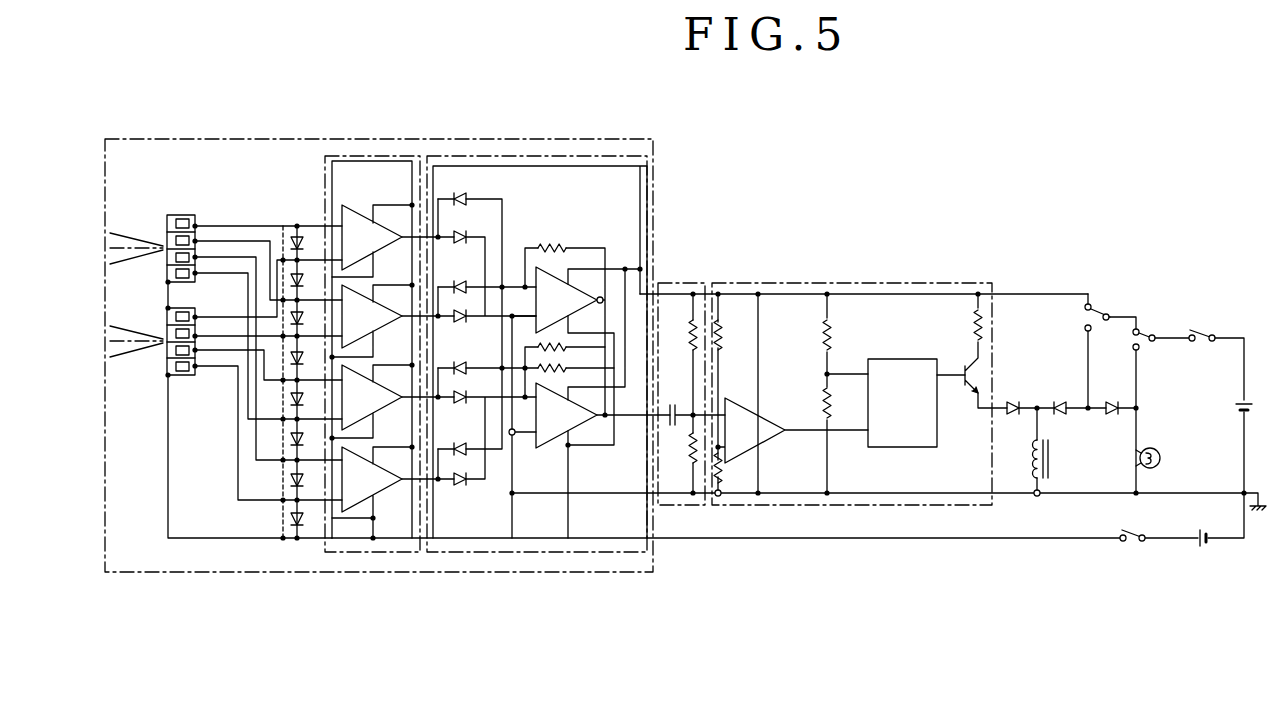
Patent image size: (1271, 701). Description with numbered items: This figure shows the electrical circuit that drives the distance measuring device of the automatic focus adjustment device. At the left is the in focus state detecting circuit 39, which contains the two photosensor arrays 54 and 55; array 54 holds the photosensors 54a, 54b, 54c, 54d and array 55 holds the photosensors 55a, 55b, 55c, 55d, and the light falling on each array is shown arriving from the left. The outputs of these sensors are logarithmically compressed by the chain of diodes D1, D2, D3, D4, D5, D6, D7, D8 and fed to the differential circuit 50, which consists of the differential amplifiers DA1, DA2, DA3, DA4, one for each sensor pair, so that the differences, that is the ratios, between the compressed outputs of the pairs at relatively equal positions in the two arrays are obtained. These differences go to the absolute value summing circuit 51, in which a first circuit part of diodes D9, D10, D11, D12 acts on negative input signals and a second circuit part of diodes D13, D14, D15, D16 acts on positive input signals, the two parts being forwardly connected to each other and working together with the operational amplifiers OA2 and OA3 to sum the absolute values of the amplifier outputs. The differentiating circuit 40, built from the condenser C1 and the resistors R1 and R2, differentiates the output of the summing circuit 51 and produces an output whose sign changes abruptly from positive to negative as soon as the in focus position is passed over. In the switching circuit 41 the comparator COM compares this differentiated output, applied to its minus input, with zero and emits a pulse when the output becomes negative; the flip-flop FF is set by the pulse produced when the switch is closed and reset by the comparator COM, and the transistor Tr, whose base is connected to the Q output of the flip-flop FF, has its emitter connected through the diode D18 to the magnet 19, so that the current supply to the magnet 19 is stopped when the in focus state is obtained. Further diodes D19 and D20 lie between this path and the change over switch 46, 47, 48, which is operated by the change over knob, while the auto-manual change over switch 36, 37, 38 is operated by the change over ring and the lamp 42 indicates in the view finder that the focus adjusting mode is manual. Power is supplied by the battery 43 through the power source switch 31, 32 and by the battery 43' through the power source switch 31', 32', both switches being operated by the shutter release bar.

The in focus state detecting circuit 39 is at (230, 132).
The differential circuit 50 is at (348, 149).
The absolute value summing circuit 51 is at (455, 149).
The differentiating circuit 40 is at (681, 275).
The switching circuit 41 is at (743, 275).
The photosensor array 54 is at (170, 231).
The photosensor 54a is at (186, 219).
The photosensor 54b is at (180, 240).
The photosensor 54c is at (180, 258).
The photosensor 54d is at (186, 275).
The photosensor array 55 is at (174, 365).
The photosensor 55a is at (186, 313).
The photosensor 55b is at (180, 333).
The photosensor 55c is at (180, 350).
The photosensor 55d is at (186, 368).
The diode D1 is at (307, 252).
The diode D2 is at (308, 288).
The diode D3 is at (305, 330).
The diode D4 is at (309, 369).
The diode D5 is at (305, 410).
The diode D6 is at (309, 448).
The diode D7 is at (310, 482).
The diode D8 is at (309, 527).
The diode D9 is at (466, 203).
The diode D10 is at (462, 270).
The diode D11 is at (458, 363).
The diode D12 is at (458, 444).
The diode D13 is at (456, 243).
The diode D14 is at (456, 322).
The diode D15 is at (456, 403).
The diode D16 is at (456, 485).
The differential amplifier DA1 is at (373, 239).
The differential amplifier DA2 is at (371, 320).
The differential amplifier DA3 is at (371, 401).
The differential amplifier DA4 is at (373, 492).
The second operational amplifier OA2 is at (575, 391).
The operational amplifier OA3 is at (589, 358).
The resistor R1 is at (689, 450).
The resistor R2 is at (689, 345).
The condenser C1 is at (672, 404).
The comparator COM is at (793, 430).
The flip-flop FF is at (906, 434).
The transistor Tr is at (970, 369).
The diode D18 is at (1014, 402).
The diode D19 is at (1061, 402).
The diode D20 is at (1113, 414).
The magnet 19 is at (1050, 462).
The lamp 42 is at (1160, 461).
The auto-manual change over switch 36 is at (1085, 306).
The auto-manual change over switch 37 is at (1100, 308).
The auto-manual change over switch 38 is at (1085, 330).
The change over switch 46 is at (1156, 336).
The change over switch 47 is at (1133, 350).
The switch contact 48 is at (1139, 330).
The power source switch 31 is at (1217, 354).
The power source switch 32 is at (1192, 355).
The battery 43 is at (1228, 448).
The power source switch 31' is at (1139, 523).
The power source switch 32' is at (1133, 552).
The battery 43' is at (1206, 526).